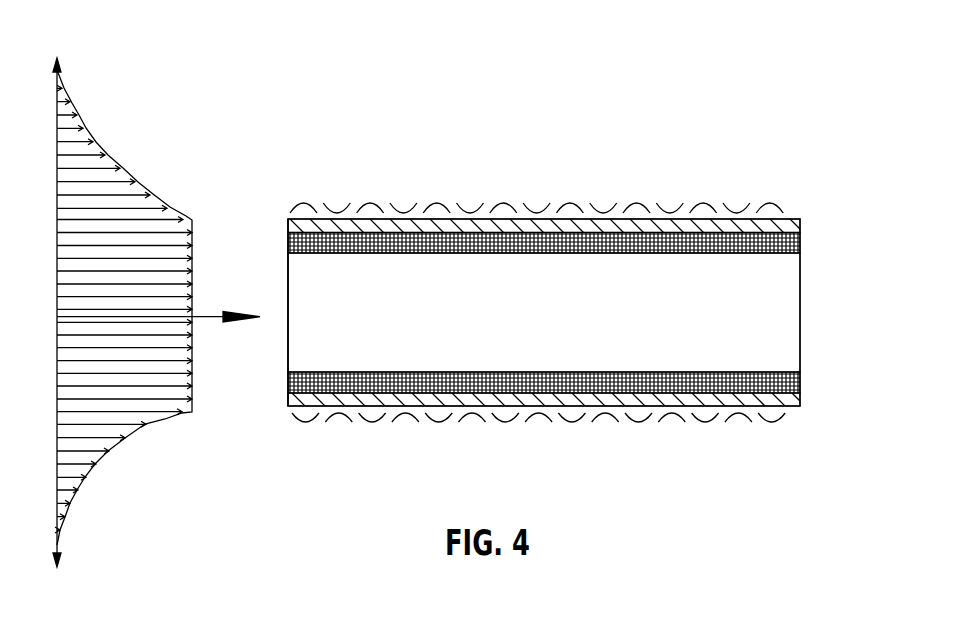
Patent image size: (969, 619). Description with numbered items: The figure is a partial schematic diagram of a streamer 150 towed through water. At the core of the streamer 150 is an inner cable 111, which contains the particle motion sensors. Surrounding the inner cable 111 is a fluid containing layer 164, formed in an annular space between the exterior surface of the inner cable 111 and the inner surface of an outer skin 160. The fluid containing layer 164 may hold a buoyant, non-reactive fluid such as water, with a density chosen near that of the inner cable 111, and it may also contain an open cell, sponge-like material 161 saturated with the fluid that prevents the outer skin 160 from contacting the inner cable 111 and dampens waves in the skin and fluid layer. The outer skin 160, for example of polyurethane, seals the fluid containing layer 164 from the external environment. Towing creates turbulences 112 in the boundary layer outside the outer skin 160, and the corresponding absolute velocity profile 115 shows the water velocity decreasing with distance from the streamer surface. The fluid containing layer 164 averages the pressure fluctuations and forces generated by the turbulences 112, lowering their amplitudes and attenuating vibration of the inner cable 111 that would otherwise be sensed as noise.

The inner cable 111 is at (800, 313).
The turbulences 112 is at (775, 203).
The absolute velocity profile 115 is at (118, 190).
The streamer 150 is at (756, 168).
The outer skin 160 is at (802, 220).
The open cell material 161 is at (287, 233).
The fluid containing layer 164 is at (802, 242).